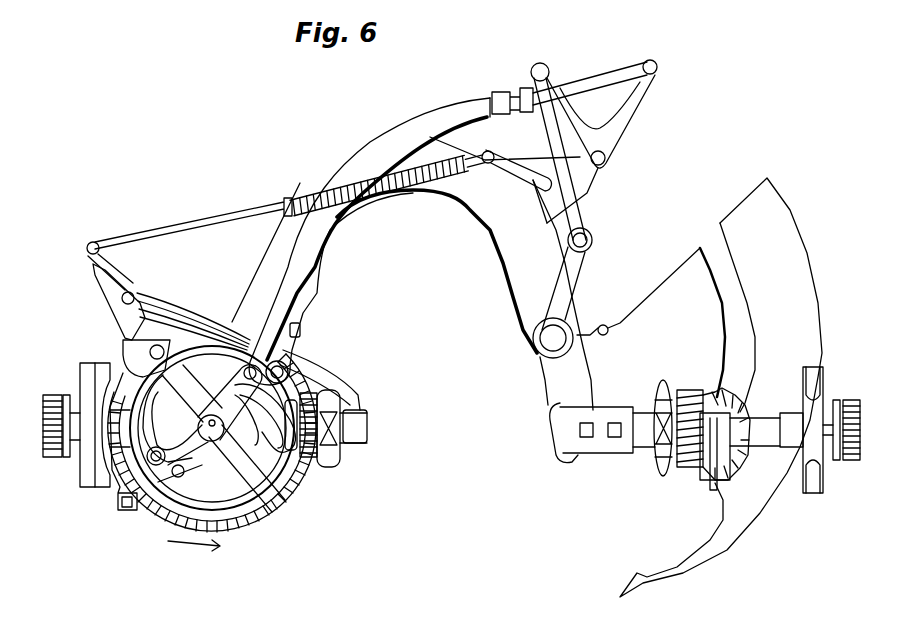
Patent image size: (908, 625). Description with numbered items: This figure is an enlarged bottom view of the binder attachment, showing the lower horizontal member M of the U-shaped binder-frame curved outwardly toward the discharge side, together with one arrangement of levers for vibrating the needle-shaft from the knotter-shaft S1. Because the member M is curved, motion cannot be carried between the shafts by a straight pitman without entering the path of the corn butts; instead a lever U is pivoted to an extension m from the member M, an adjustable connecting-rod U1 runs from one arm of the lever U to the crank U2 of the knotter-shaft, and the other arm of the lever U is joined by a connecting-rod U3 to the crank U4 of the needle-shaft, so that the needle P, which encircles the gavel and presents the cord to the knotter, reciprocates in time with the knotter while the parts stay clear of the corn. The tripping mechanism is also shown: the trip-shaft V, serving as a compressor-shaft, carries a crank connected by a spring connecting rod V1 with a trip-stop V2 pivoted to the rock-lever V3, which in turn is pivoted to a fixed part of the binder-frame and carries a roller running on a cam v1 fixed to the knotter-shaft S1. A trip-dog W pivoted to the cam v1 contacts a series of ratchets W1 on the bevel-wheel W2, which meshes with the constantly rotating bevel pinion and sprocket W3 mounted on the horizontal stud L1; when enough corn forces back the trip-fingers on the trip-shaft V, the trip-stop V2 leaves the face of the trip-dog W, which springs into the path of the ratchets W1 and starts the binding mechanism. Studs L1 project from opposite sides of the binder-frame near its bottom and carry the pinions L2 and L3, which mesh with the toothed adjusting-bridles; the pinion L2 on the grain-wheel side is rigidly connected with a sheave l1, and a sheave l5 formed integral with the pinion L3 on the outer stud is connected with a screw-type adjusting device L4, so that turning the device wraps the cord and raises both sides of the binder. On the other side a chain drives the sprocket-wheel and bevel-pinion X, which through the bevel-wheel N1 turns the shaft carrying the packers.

The lower horizontal member of the U-shaped binder-frame M is at (452, 183).
The adjustable connecting-rod U1 is at (478, 110).
The lever U is at (628, 114).
The connecting-rod U3 is at (558, 153).
The crank of the needle-shaft U4 is at (575, 258).
The crank of the knotter-shaft U2 is at (270, 368).
The extension m is at (580, 178).
The trip-shaft V is at (513, 168).
The spring connecting rod V1 is at (258, 212).
The trip-stop V2 is at (165, 315).
The rock-lever V3 is at (118, 313).
The trip-dog W is at (272, 488).
The ratchets W1 is at (170, 410).
The bevel-wheel W2 is at (248, 522).
The bevel pinion and sprocket W3 is at (310, 460).
The knotter-shaft S1 is at (213, 412).
The cam v1 is at (183, 455).
The adjusting device L4 is at (80, 382).
The pinion L3 is at (50, 455).
The sheave l5 is at (102, 370).
The studs L1 is at (765, 435).
The sprocket-wheel and bevel-pinion X is at (670, 462).
The bevel-wheel N1 is at (710, 392).
The sheave l1 is at (822, 385).
The pinion L2 is at (855, 460).
The needle P is at (690, 555).